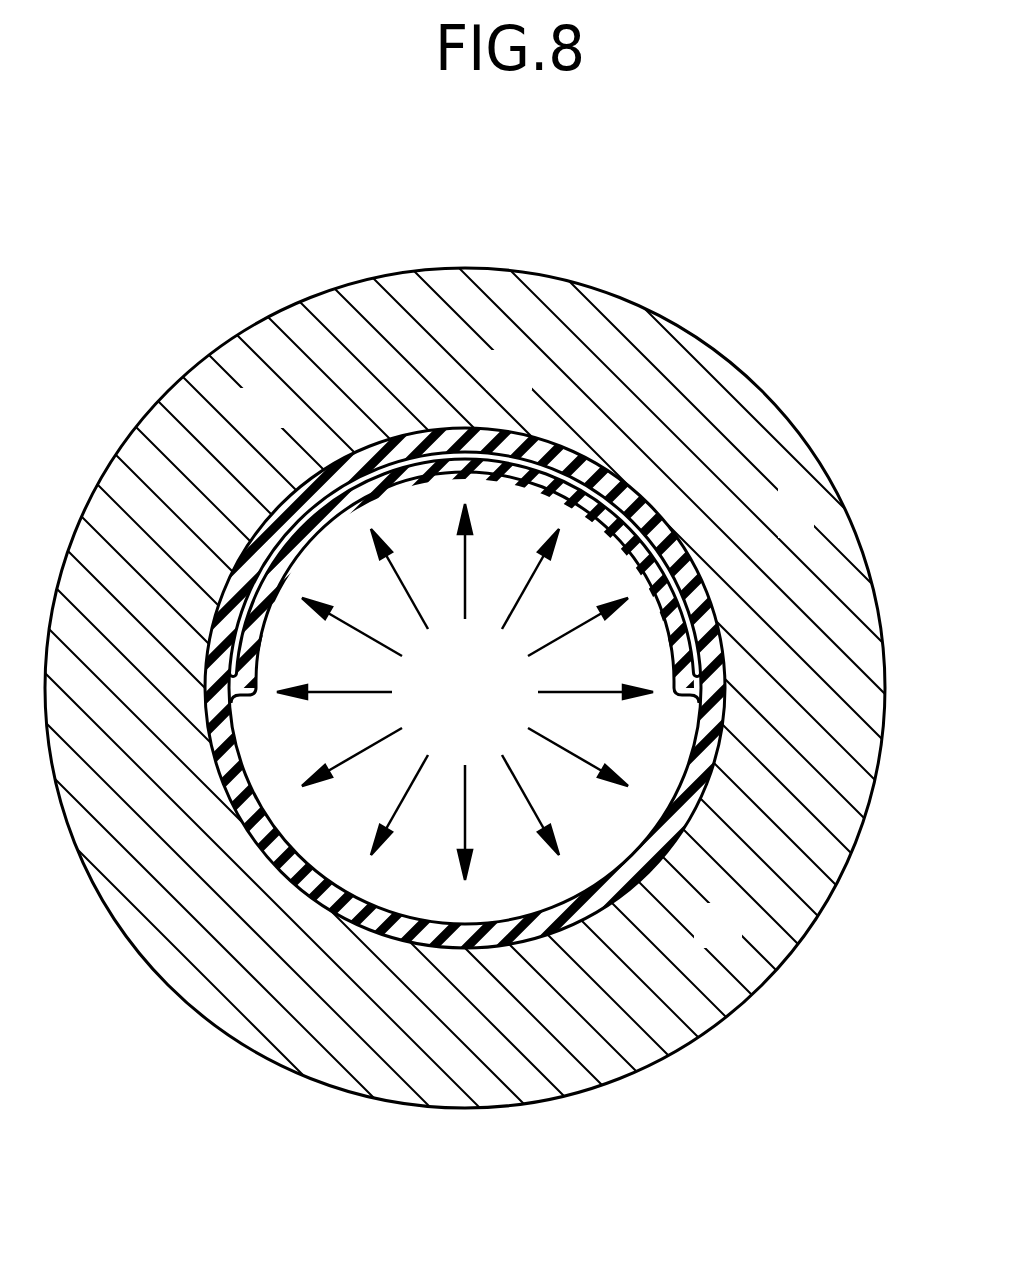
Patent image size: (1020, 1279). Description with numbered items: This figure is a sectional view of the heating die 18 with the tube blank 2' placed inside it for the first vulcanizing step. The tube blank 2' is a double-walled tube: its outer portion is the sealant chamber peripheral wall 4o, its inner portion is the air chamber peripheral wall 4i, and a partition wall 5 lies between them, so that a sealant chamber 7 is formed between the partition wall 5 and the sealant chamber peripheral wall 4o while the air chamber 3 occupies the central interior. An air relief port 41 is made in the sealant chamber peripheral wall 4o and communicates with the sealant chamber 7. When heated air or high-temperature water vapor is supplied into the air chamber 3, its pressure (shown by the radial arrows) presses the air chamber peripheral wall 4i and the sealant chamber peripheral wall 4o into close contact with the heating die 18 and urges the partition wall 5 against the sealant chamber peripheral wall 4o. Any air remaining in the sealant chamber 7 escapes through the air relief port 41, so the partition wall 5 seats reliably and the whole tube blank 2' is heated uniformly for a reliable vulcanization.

The heating die 18 is at (778, 358).
The tube blank 2' is at (507, 688).
The sealant chamber peripheral wall 4o is at (307, 470).
The air chamber peripheral wall 4i is at (675, 847).
The air relief port 41 is at (480, 440).
The partition wall 5 is at (333, 525).
The sealant chamber 7 is at (507, 462).
The air chamber 3 is at (506, 905).